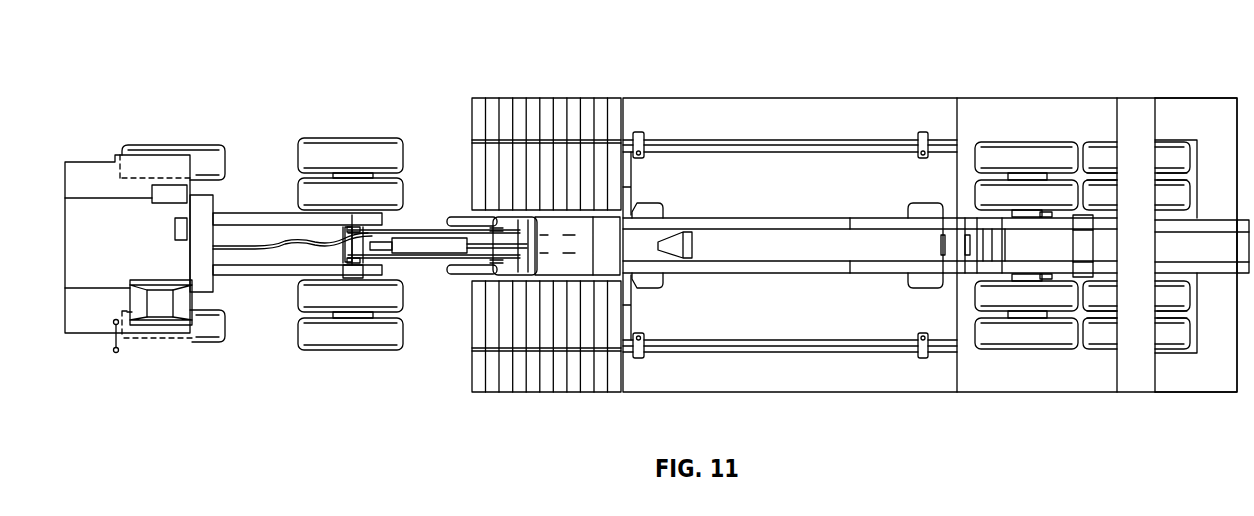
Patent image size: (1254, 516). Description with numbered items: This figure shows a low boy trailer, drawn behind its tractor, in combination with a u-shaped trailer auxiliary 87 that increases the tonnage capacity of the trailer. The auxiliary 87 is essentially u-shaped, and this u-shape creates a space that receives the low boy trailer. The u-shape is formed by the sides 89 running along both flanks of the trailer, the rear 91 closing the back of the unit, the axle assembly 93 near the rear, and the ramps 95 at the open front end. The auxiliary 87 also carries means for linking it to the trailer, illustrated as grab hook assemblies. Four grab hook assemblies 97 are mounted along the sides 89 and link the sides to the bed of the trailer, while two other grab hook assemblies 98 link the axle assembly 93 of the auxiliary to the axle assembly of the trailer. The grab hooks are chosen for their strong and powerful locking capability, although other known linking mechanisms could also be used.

The trailer auxiliary 87 is at (489, 45).
The ramps 95 is at (544, 107).
The grab hook assemblies 97 is at (638, 132).
The sides 89 is at (830, 112).
The grab hook assemblies 98 is at (1088, 215).
The axle assembly 93 is at (1180, 338).
The rear 91 is at (1218, 377).